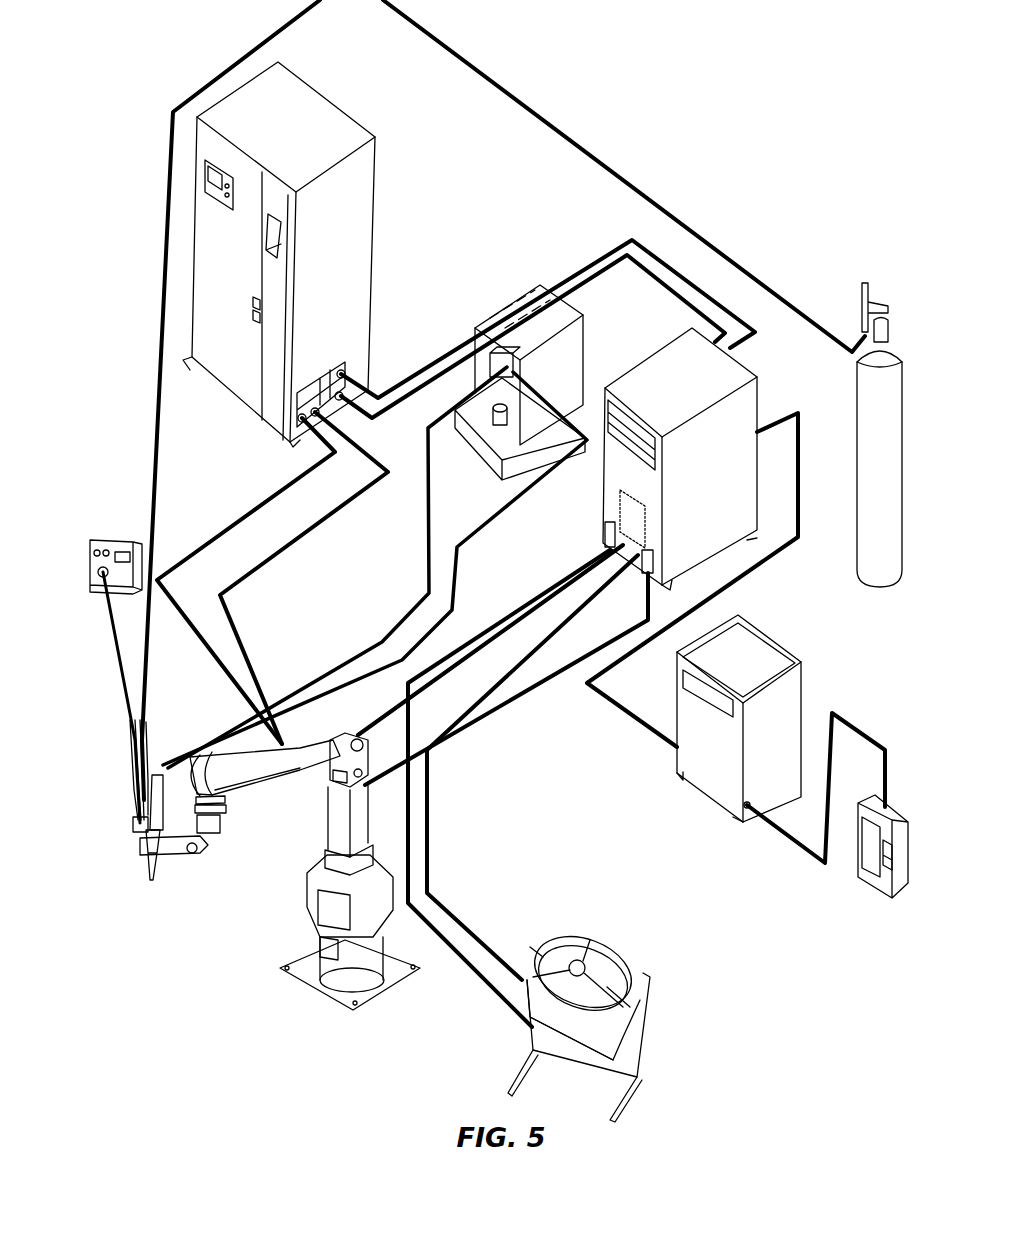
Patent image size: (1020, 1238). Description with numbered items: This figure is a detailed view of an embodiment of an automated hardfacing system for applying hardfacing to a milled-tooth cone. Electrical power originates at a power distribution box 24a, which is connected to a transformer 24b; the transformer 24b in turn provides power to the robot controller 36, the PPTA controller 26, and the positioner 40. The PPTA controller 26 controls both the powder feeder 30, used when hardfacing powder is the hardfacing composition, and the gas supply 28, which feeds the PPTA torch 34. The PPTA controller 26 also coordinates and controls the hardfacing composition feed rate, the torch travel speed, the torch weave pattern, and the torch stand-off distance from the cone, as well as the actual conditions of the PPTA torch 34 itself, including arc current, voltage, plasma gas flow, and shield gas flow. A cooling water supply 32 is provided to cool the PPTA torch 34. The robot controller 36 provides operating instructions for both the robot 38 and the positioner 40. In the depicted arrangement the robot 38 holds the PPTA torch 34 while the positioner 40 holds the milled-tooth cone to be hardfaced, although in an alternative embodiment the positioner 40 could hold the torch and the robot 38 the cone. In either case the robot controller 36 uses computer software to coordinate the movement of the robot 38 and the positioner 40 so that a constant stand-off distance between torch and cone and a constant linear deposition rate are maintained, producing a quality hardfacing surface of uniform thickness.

The power distribution box 24a is at (887, 892).
The transformer 24b is at (728, 761).
The PPTA controller 26 is at (680, 396).
The gas supply 28 is at (895, 491).
The powder feeder 30 is at (110, 547).
The cooling water supply 32 is at (565, 358).
The PPTA torch 34 is at (152, 872).
The robot controller 36 is at (302, 134).
The robot 38 is at (342, 827).
The positioner 40 is at (643, 1030).